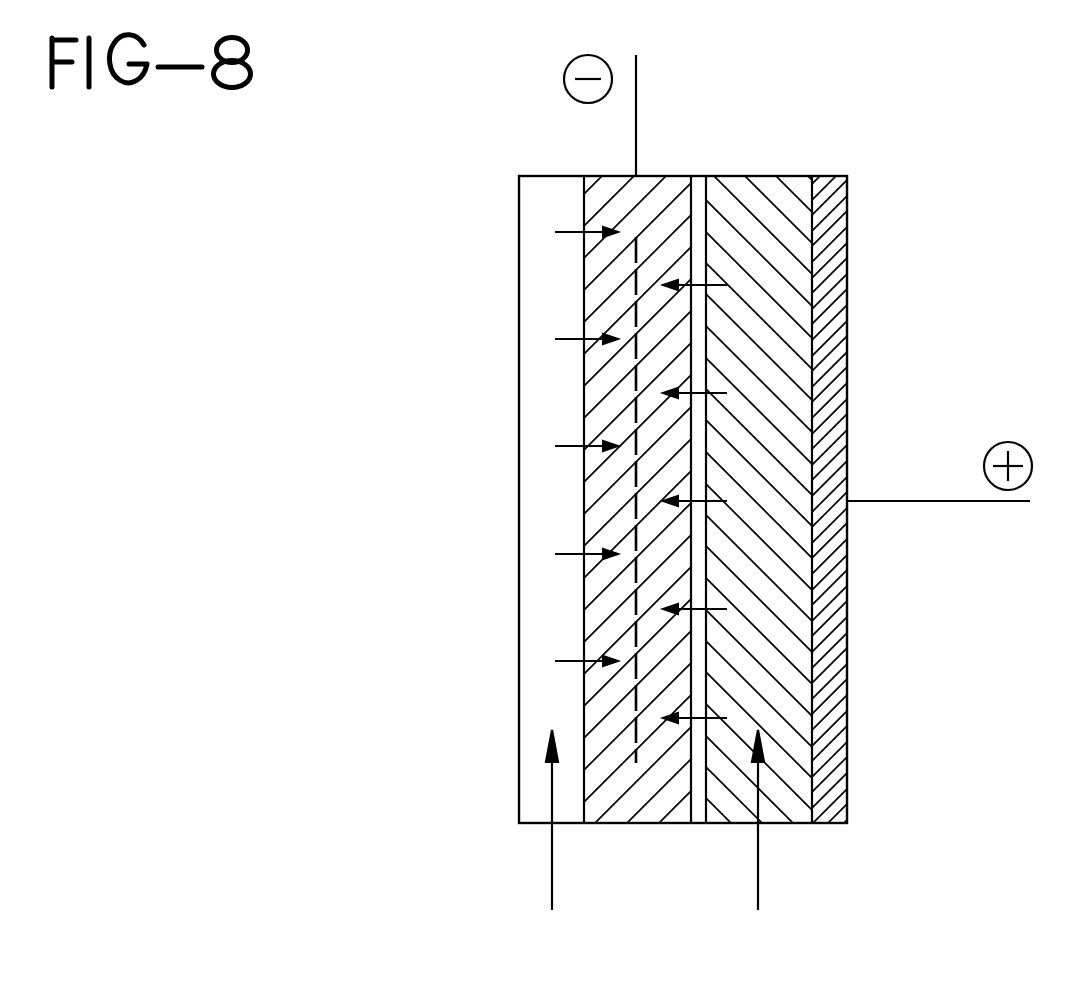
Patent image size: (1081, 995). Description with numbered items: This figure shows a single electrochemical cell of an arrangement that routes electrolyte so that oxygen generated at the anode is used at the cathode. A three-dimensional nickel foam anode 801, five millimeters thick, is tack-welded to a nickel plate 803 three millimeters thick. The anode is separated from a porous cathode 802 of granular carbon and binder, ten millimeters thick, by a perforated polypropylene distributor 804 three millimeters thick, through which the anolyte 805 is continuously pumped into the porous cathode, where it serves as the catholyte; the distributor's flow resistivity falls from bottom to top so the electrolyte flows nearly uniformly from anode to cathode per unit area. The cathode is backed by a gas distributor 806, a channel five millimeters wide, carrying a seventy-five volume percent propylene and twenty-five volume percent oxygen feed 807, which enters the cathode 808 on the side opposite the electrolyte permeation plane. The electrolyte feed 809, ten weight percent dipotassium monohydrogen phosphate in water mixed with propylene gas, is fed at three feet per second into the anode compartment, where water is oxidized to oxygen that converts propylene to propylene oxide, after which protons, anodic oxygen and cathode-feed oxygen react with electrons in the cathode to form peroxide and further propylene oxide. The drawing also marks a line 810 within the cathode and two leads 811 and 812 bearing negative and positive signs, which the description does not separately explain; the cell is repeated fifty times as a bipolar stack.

The nickel foam anode 801 is at (770, 215).
The porous cathode 802 is at (602, 266).
The nickel plate 803 is at (827, 324).
The perforated polypropylene distributor 804 is at (698, 190).
The anolyte 805 is at (712, 285).
The gas distributor 806 is at (548, 497).
The propylene/oxygen feed 807 is at (553, 877).
The cathode 808 is at (572, 230).
The electrolyte feed 809 is at (760, 877).
The reaction front 810 is at (634, 734).
The negative terminal lead 811 is at (637, 87).
The positive terminal lead 812 is at (962, 501).